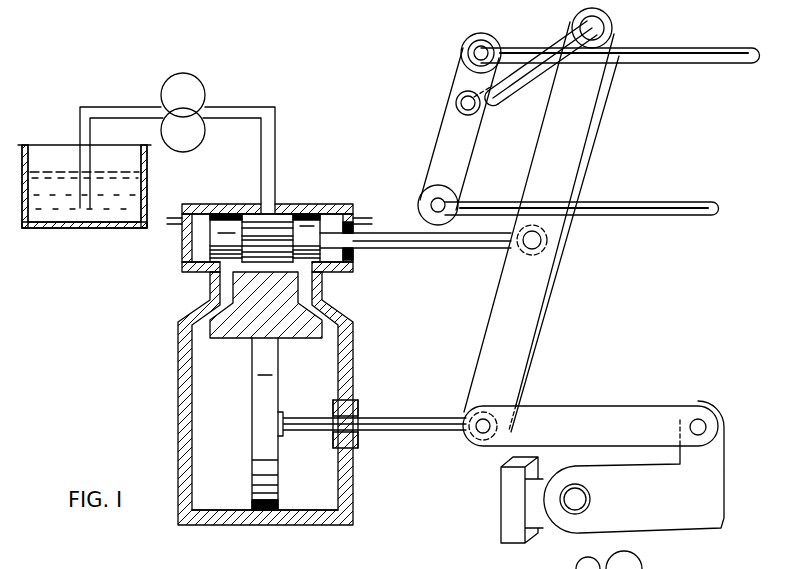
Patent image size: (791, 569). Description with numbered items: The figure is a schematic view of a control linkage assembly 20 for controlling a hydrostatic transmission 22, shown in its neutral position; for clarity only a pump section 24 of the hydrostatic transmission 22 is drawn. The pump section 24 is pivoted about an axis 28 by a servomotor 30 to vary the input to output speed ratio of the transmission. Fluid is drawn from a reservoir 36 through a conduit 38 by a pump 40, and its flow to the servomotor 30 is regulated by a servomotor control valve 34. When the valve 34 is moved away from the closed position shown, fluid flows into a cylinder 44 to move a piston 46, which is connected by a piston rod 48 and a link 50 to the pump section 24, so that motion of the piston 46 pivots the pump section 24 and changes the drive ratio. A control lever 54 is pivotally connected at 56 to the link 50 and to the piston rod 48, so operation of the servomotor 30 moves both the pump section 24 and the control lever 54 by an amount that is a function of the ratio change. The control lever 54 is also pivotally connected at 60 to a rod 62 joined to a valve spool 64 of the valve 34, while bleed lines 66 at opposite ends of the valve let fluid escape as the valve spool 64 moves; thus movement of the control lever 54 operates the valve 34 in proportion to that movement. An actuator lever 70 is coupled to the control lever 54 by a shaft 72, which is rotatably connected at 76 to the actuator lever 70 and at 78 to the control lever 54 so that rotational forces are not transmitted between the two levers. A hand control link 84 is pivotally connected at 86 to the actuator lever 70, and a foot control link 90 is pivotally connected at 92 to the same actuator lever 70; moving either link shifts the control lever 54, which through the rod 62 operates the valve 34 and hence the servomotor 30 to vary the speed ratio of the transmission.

The control linkage assembly 20 is at (366, 42).
The hydrostatic transmission 22 is at (497, 510).
The pump section 24 is at (712, 500).
The axis 28 is at (588, 500).
The servomotor 30 is at (176, 420).
The servomotor control valve 34 is at (180, 247).
The reservoir 36 is at (60, 150).
The conduit 38 is at (275, 108).
The pump 40 is at (195, 60).
The cylinder 44 is at (228, 510).
The piston 46 is at (258, 420).
The piston rod 48 is at (425, 423).
The link 50 is at (618, 408).
The control lever 54 is at (556, 301).
The pivotal connection 56 is at (475, 434).
The pivotal connection 60 is at (545, 243).
The rod 62 is at (440, 248).
The valve spool 64 is at (305, 213).
The bleed lines 66 is at (180, 217).
The actuator lever 70 is at (436, 140).
The shaft 72 is at (511, 88).
The rotatable connection 76 is at (452, 103).
The rotatable connection 78 is at (578, 30).
The hand control link 84 is at (728, 48).
The pivotal connection 86 is at (470, 52).
The foot control link 90 is at (690, 202).
The pivotal connection 92 is at (460, 200).